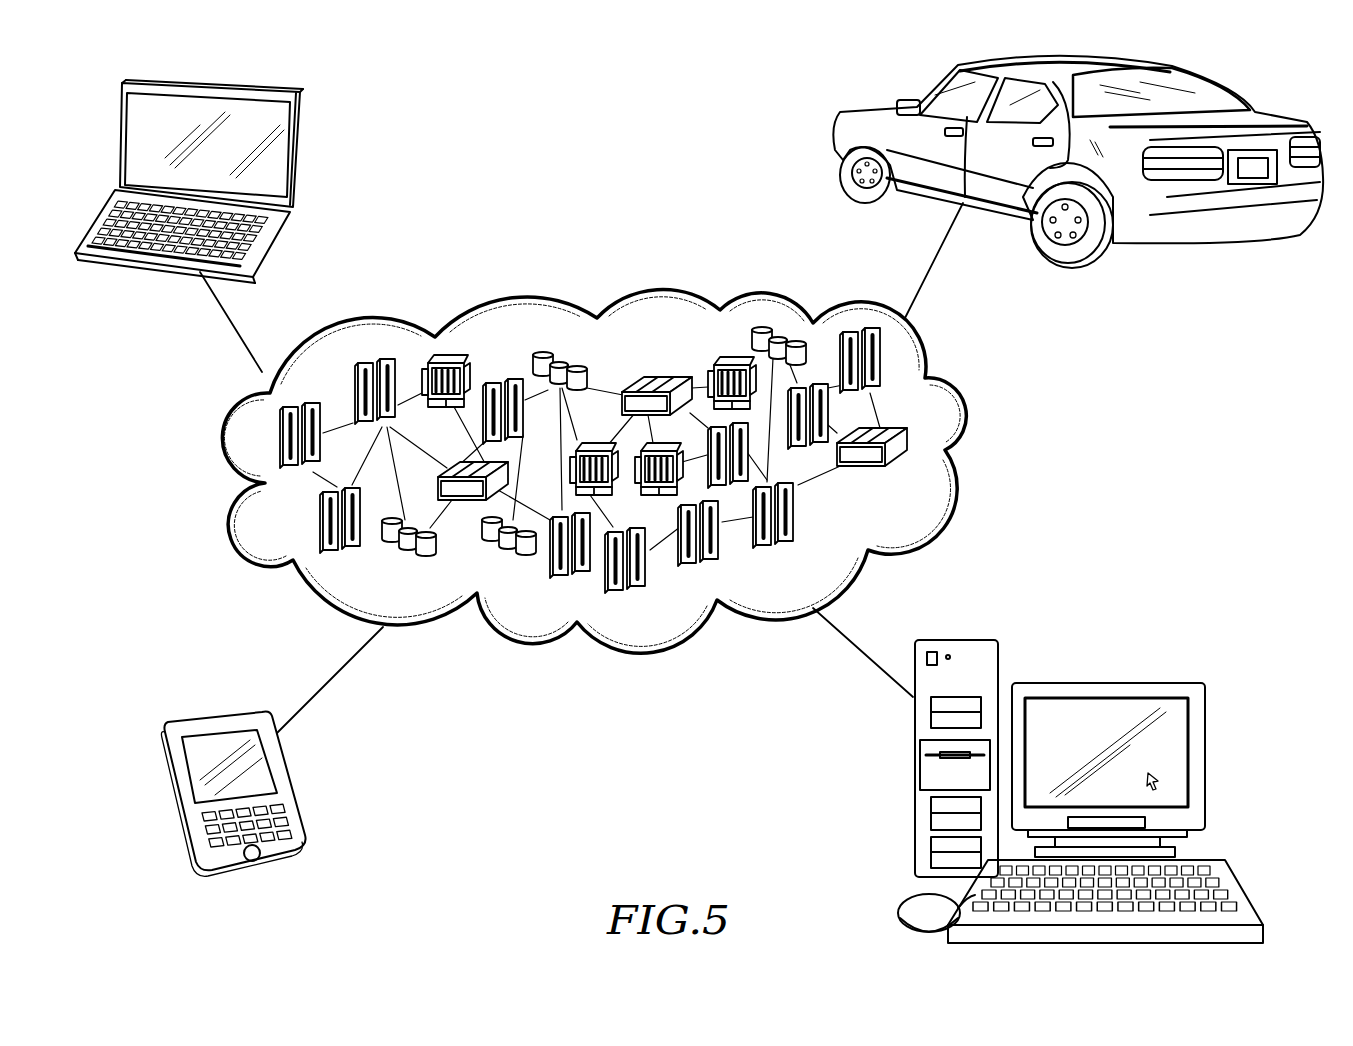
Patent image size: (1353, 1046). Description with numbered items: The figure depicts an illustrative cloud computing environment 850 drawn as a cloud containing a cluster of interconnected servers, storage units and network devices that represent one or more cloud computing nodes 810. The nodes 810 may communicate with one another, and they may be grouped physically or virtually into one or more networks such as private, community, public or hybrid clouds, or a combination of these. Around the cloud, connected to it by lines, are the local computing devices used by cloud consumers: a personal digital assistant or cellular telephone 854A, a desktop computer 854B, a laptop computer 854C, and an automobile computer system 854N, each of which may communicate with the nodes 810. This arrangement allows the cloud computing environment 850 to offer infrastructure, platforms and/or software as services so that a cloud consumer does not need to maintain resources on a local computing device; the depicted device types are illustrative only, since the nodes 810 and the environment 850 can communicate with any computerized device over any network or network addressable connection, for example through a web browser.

The cloud computing nodes 810 is at (918, 478).
The cloud computing environment 850 is at (957, 385).
The personal digital assistant (PDA) or cellular telephone 854A is at (207, 718).
The desktop computer 854B is at (1152, 683).
The laptop computer 854C is at (296, 142).
The automobile computer system 854N is at (1276, 110).